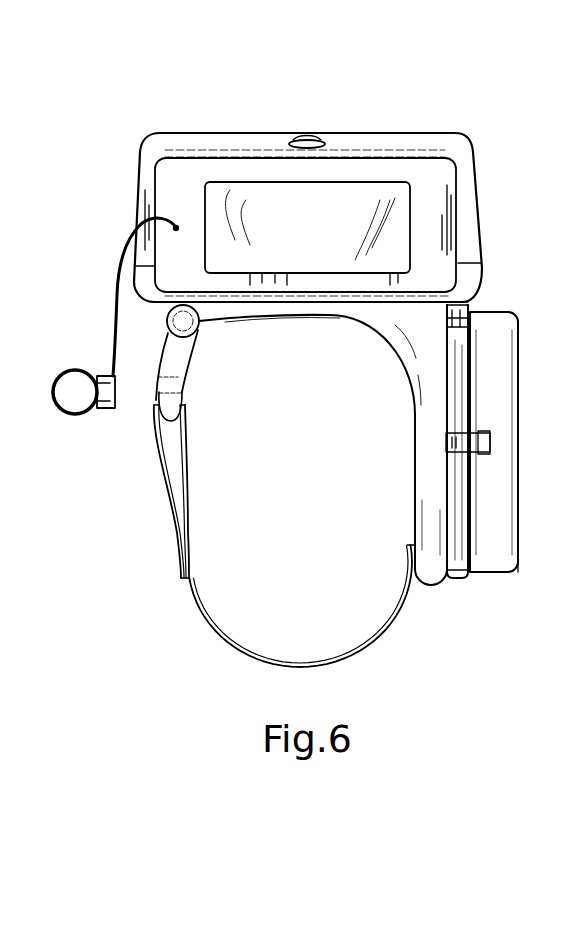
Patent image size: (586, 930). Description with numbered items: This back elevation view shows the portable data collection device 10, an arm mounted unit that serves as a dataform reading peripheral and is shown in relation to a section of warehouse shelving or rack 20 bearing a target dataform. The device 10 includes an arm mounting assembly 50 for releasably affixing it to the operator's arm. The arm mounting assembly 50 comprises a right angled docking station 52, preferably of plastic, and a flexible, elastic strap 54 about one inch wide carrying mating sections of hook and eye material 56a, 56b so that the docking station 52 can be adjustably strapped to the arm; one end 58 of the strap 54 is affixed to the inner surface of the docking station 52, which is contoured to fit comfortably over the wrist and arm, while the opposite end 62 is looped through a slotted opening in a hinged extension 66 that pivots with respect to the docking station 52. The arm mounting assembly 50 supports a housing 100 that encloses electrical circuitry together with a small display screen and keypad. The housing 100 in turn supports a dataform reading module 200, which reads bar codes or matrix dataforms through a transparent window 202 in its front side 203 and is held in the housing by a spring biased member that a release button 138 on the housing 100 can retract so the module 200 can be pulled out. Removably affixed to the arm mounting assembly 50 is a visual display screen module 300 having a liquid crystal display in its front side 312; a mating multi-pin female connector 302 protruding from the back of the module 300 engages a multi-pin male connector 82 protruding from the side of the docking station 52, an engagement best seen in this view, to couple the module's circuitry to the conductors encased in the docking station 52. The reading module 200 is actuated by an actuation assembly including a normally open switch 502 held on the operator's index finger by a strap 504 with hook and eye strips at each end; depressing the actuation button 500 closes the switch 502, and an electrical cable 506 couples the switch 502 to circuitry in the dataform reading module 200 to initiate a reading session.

The portable data collection device 10 is at (342, 82).
The warehouse shelving or rack 20 is at (14, 85).
The arm mounting assembly 50 is at (182, 510).
The docking station 52 is at (366, 370).
The strap 54 is at (224, 638).
The hook and eye material section 56a is at (187, 538).
The hook and eye material section 56b is at (190, 542).
The strap end 58 is at (411, 548).
The opposite strap end 62 is at (186, 580).
The hinged extension 66 is at (170, 352).
The multi-pin male connector 82 is at (450, 322).
The housing 100 is at (375, 132).
The release button 138 is at (305, 140).
The dataform reading module 200 is at (498, 580).
The transparent window 202 is at (372, 241).
The front side 203 is at (432, 216).
The visual display screen module 300 is at (463, 582).
The multi-pin female connector 302 is at (465, 318).
The front side 312 is at (522, 530).
The actuation button 500 is at (116, 392).
The normally open switch 502 is at (108, 410).
The strap 504 is at (62, 372).
The electrical cable 506 is at (113, 293).